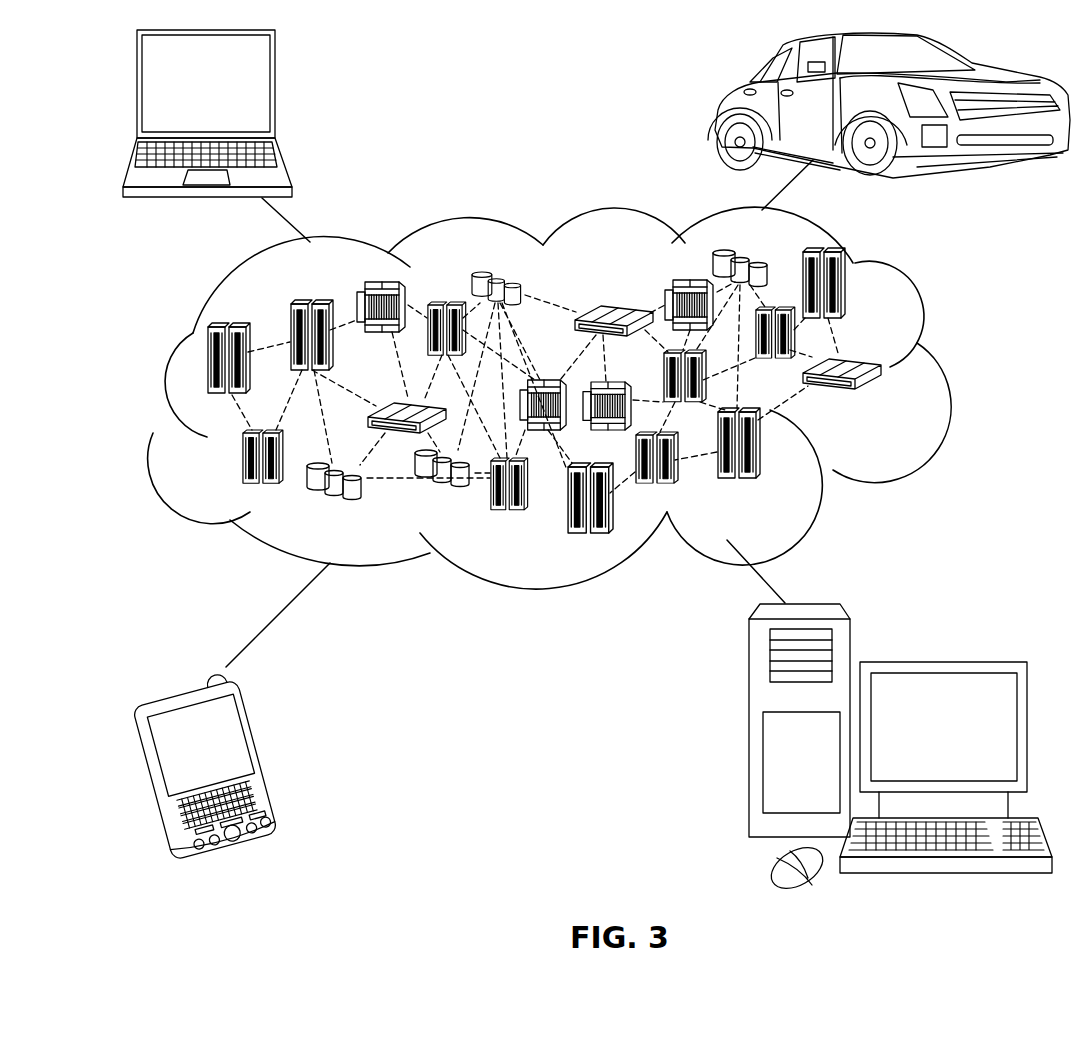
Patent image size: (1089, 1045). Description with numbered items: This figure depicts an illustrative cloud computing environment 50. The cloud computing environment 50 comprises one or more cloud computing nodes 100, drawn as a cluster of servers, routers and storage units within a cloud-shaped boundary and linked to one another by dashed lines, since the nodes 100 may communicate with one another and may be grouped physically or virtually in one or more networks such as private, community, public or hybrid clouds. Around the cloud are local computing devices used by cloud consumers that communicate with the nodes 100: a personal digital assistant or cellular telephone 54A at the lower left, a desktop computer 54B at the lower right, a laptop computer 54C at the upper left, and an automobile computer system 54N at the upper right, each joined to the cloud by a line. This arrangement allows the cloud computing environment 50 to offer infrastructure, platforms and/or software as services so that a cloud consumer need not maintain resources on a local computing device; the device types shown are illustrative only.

The laptop computer 54C is at (277, 92).
The automobile computer system 54N is at (720, 108).
The personal digital assistant (PDA) or cellular telephone 54A is at (267, 760).
The desktop computer 54B is at (940, 662).
The cloud computing environment 50 is at (943, 370).
The cloud computing nodes 100 is at (882, 402).